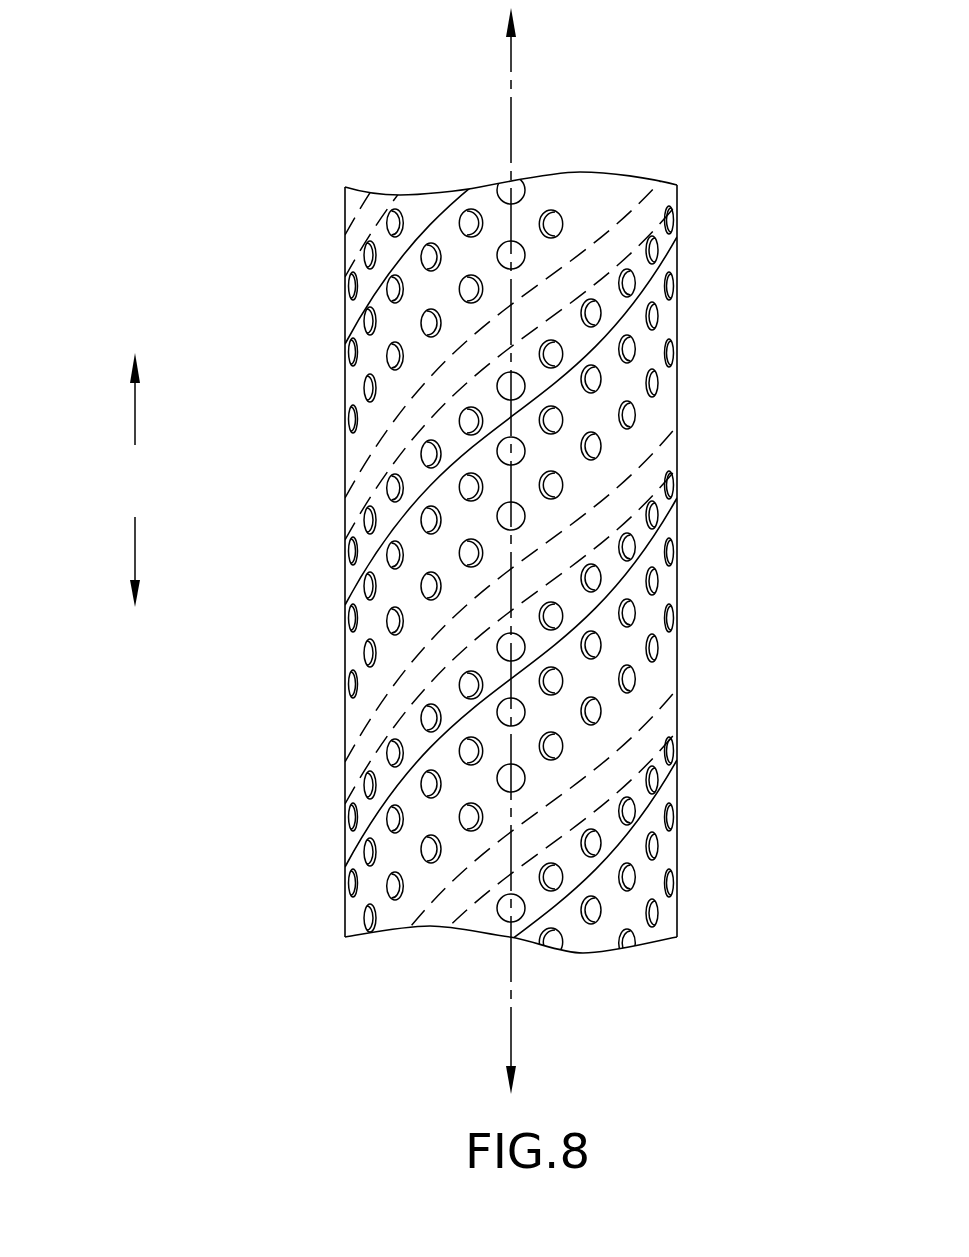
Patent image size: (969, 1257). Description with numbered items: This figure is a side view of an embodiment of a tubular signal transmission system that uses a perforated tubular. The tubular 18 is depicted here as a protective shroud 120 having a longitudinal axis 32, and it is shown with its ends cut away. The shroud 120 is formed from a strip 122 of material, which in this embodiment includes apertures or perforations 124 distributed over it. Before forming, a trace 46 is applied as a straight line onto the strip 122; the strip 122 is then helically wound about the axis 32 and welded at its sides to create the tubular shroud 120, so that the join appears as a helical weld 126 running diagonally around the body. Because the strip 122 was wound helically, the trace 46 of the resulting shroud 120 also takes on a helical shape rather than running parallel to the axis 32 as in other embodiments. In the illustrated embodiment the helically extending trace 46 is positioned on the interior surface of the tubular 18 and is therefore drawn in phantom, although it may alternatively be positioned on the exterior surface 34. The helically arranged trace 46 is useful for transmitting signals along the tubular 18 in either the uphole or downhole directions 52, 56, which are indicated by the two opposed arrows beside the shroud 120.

The tubular 18 is at (360, 707).
The longitudinal axis 32 is at (511, 1046).
The exterior surface 34 is at (401, 910).
The trace 46 is at (628, 207).
The uphole direction 52 is at (131, 550).
The downhole direction 56 is at (131, 412).
The protective shroud 120 is at (346, 380).
The strip 122 is at (628, 710).
The perforations 124 is at (426, 255).
The helical weld 126 is at (596, 346).